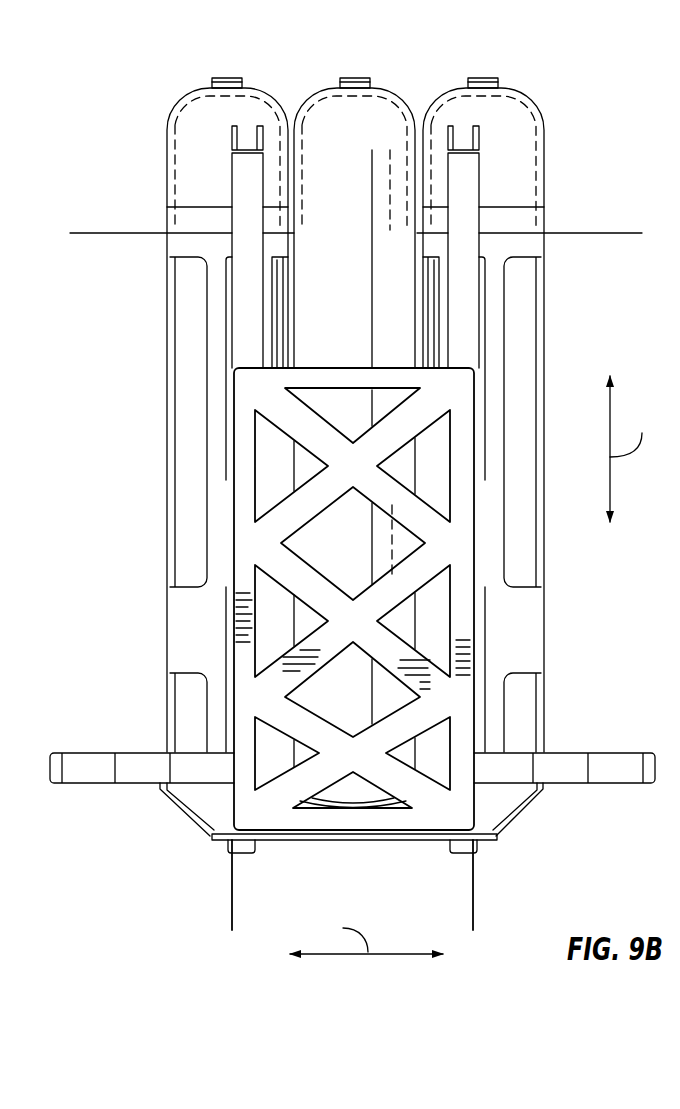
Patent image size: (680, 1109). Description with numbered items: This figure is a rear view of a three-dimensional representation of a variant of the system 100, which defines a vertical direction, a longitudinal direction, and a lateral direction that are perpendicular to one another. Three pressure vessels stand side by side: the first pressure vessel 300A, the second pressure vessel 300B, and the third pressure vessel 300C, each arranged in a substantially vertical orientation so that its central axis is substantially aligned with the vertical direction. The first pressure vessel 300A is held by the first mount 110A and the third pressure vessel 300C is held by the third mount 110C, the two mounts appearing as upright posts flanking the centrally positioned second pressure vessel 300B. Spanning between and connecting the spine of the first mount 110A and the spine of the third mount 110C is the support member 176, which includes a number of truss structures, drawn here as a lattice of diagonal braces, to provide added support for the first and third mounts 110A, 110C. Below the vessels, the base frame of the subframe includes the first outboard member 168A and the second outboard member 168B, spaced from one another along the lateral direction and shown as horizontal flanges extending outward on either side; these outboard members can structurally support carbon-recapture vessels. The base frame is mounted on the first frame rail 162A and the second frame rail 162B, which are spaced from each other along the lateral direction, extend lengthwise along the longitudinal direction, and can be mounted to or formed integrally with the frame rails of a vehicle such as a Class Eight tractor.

The system 100 is at (636, 143).
The first pressure vessel 300A is at (513, 122).
The second pressure vessel 300B is at (328, 120).
The third pressure vessel 300C is at (188, 120).
The first mount 110A is at (478, 328).
The third mount 110C is at (246, 340).
The first outboard member 168A is at (617, 758).
The second outboard member 168B is at (92, 752).
The first frame rail 162A is at (472, 908).
The second frame rail 162B is at (228, 908).
The support member 176 is at (270, 808).